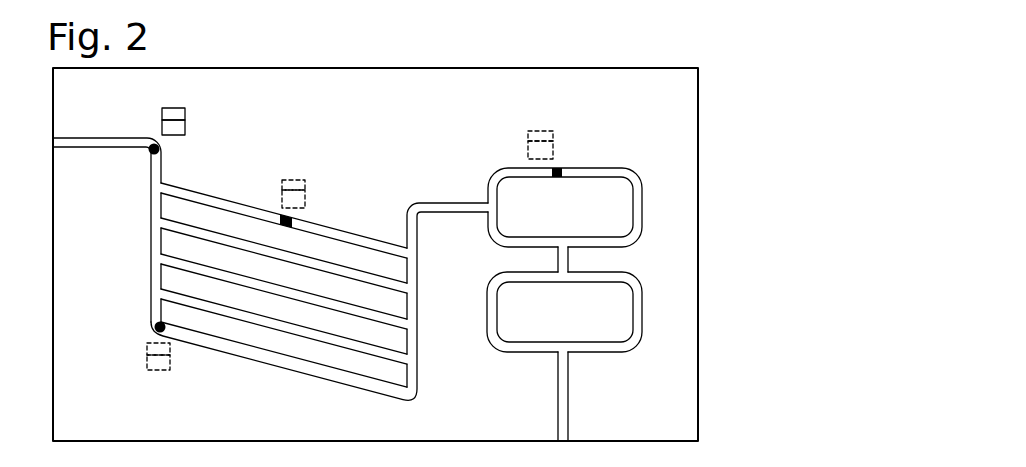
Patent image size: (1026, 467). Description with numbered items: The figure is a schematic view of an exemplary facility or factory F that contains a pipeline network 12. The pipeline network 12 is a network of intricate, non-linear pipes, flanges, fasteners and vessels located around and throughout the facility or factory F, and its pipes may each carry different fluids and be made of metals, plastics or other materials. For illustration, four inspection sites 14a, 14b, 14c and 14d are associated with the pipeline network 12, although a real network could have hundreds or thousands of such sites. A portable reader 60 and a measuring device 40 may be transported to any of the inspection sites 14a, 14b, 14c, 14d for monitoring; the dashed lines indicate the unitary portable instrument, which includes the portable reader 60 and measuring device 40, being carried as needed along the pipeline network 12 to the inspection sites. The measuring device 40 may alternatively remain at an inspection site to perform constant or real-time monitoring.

The facility or factory F is at (668, 69).
The pipeline network 12 is at (91, 151).
The inspection site 14a is at (168, 143).
The inspection site 14b is at (146, 332).
The inspection site 14c is at (287, 236).
The inspection site 14d is at (561, 185).
The measuring device 40 is at (190, 110).
The portable reader 60 is at (190, 127).